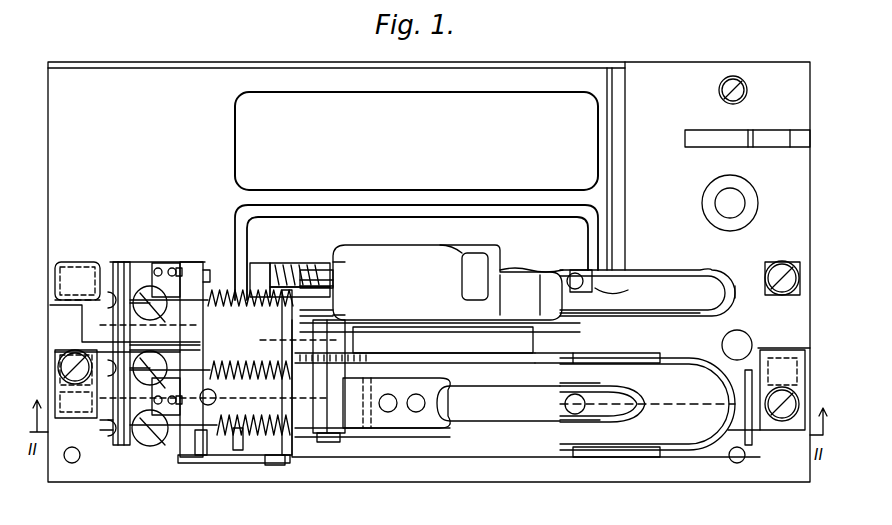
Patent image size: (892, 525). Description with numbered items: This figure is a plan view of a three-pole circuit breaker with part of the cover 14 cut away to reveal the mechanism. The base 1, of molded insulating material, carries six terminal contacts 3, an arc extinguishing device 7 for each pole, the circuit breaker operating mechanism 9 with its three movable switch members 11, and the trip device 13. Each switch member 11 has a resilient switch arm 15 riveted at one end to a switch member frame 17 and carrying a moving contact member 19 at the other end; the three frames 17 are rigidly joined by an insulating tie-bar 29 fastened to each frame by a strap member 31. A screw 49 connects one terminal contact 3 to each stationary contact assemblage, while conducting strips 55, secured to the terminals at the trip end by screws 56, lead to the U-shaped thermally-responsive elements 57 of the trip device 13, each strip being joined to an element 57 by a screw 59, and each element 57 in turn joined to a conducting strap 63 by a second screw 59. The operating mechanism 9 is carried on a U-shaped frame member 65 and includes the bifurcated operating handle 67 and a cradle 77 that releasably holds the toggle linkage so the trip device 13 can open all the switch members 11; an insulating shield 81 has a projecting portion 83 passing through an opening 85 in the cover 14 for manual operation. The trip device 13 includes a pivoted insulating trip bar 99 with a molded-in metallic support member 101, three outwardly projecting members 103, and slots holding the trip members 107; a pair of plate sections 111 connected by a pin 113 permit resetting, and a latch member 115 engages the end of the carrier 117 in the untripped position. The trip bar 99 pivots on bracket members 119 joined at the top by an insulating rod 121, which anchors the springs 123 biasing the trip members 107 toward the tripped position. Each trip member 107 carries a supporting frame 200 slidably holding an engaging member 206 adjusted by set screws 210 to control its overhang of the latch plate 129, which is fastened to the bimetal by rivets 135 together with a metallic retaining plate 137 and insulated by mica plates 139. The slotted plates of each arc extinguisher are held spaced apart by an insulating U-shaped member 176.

The base 1 is at (430, 475).
The terminal contacts 3 is at (62, 272).
The arc extinguishing device 7 is at (703, 292).
The circuit breaker operating mechanism 9 is at (410, 244).
The movable switch members 11 is at (504, 413).
The trip device 13 is at (145, 227).
The cover 14 is at (665, 68).
The resilient switch arm 15 is at (590, 292).
The switch member frame 17 is at (400, 428).
The moving contact member 19 is at (625, 290).
The insulating tie-bar 29 is at (325, 445).
The strap member 31 is at (350, 420).
The screw 49 is at (782, 296).
The conducting strips 55 is at (100, 352).
The screws 56 is at (66, 342).
The thermally-responsive elements 57 is at (121, 262).
The screw 59 is at (152, 446).
The conducting strap 63 is at (204, 313).
The U-shaped frame member 65 is at (447, 382).
The bifurcated operating handle 67 is at (416, 279).
The cradle 77 is at (312, 272).
The insulating shield 81 is at (527, 287).
The projecting portion 83 is at (478, 256).
The opening 85 is at (578, 95).
The trip bar 99 is at (273, 356).
The metallic support member 101 is at (275, 466).
The outwardly projecting members 103 is at (244, 287).
The trip members 107 is at (200, 346).
The plate sections 111 is at (332, 312).
The pin 113 is at (332, 282).
The latch member 115 is at (258, 262).
The end of the carrier 117 is at (278, 262).
The bracket members 119 is at (230, 464).
The insulating rod 121 is at (200, 456).
The springs 123 is at (302, 264).
The latch plate 129 is at (150, 264).
The rivets 135 is at (112, 425).
The metallic retaining plate 137 is at (110, 284).
The mica plates 139 is at (127, 440).
The U-shaped member 176 is at (686, 310).
The supporting frame 200 is at (176, 294).
The engaging member 206 is at (165, 268).
The set screws 210 is at (183, 270).